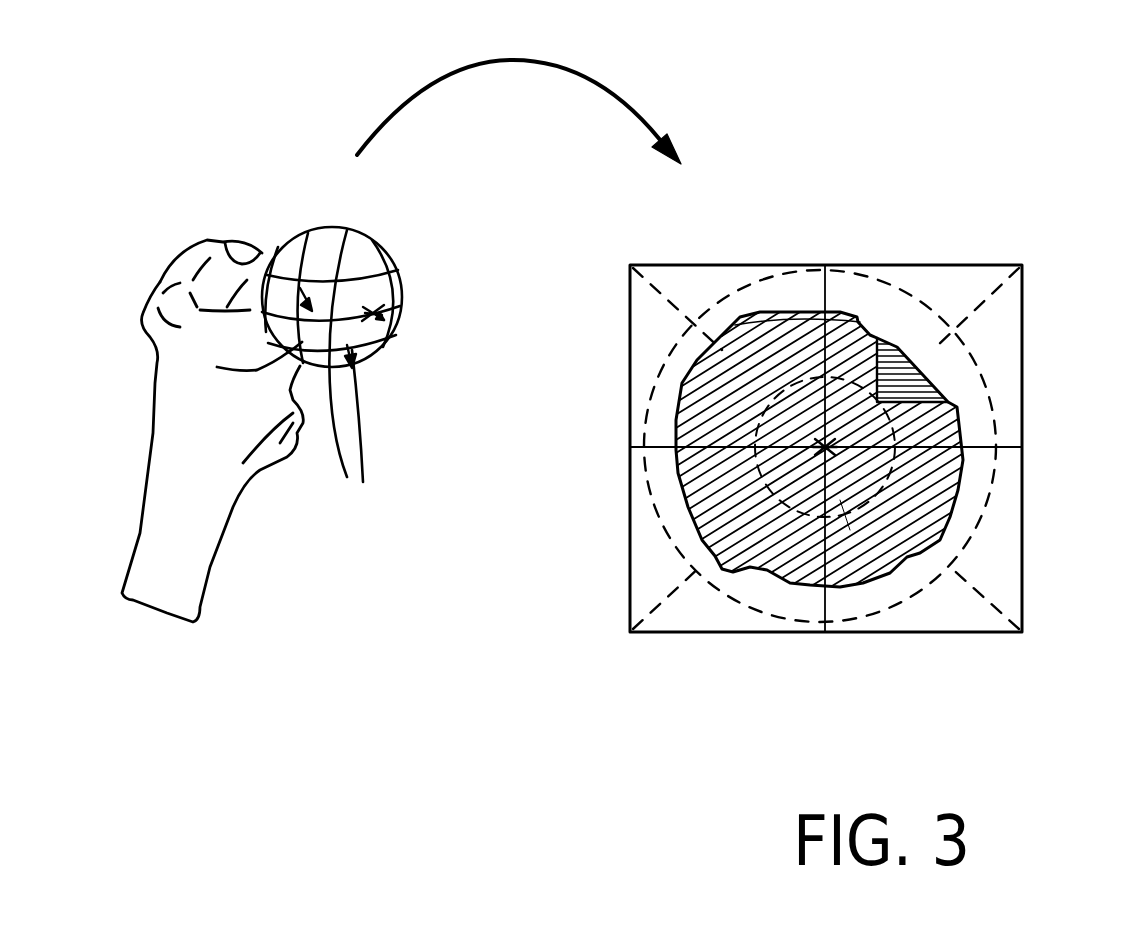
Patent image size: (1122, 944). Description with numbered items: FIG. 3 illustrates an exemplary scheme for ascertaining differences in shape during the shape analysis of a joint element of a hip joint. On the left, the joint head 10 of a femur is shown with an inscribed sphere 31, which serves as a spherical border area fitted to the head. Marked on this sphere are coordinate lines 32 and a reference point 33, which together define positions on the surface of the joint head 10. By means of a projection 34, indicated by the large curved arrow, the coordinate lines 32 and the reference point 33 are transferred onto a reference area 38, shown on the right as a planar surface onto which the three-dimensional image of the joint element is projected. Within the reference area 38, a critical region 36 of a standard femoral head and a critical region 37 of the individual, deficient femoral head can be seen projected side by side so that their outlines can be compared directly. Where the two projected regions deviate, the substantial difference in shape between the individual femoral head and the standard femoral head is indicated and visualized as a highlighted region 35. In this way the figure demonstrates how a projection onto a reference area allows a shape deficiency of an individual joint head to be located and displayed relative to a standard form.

The joint head 10 is at (280, 248).
The inscribed sphere 31 is at (321, 226).
The coordinate lines 32 is at (355, 441).
The reference point 33 is at (392, 323).
The projection 34 is at (519, 89).
The highlighted region 35 is at (893, 372).
The critical region of a standard femoral head 36 is at (793, 314).
The critical region of the individual deficient femoral head 37 is at (850, 522).
The reference area 38 is at (978, 632).